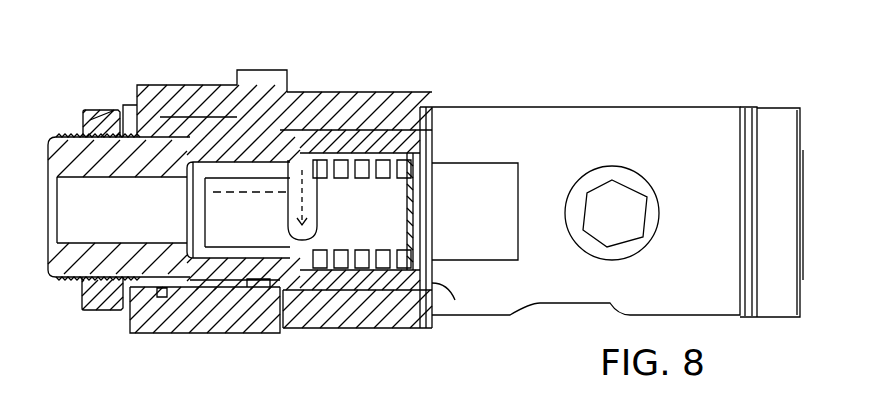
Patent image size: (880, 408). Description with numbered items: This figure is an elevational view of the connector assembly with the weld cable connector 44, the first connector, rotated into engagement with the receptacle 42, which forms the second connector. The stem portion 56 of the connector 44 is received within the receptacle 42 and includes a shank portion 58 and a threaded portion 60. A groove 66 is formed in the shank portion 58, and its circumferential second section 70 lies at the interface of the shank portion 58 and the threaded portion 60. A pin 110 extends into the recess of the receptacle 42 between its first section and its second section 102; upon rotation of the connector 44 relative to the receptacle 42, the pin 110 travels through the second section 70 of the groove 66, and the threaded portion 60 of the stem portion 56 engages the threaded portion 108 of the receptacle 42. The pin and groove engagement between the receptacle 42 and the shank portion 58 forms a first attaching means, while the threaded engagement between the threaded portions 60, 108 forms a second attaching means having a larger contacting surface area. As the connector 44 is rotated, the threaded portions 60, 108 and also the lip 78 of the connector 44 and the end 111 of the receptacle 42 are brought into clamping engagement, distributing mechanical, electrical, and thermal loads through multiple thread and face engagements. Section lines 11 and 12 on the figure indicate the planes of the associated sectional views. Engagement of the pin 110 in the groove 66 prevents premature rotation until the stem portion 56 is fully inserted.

The receptacle 42 is at (108, 219).
The weld cable connector 44 is at (699, 201).
The stem portion 56 is at (372, 118).
The shank portion 58 is at (222, 250).
The threaded portion 60 is at (428, 213).
The groove 66 is at (293, 170).
The second section of groove 70 is at (312, 184).
The lip 78 is at (448, 290).
The second section of recess 102 is at (200, 302).
The threaded portion of receptacle 108 is at (428, 137).
The pin 110 is at (285, 200).
The section line 11 is at (360, 380).
The section line 12 is at (303, 135).
The end of receptacle 111 is at (390, 295).